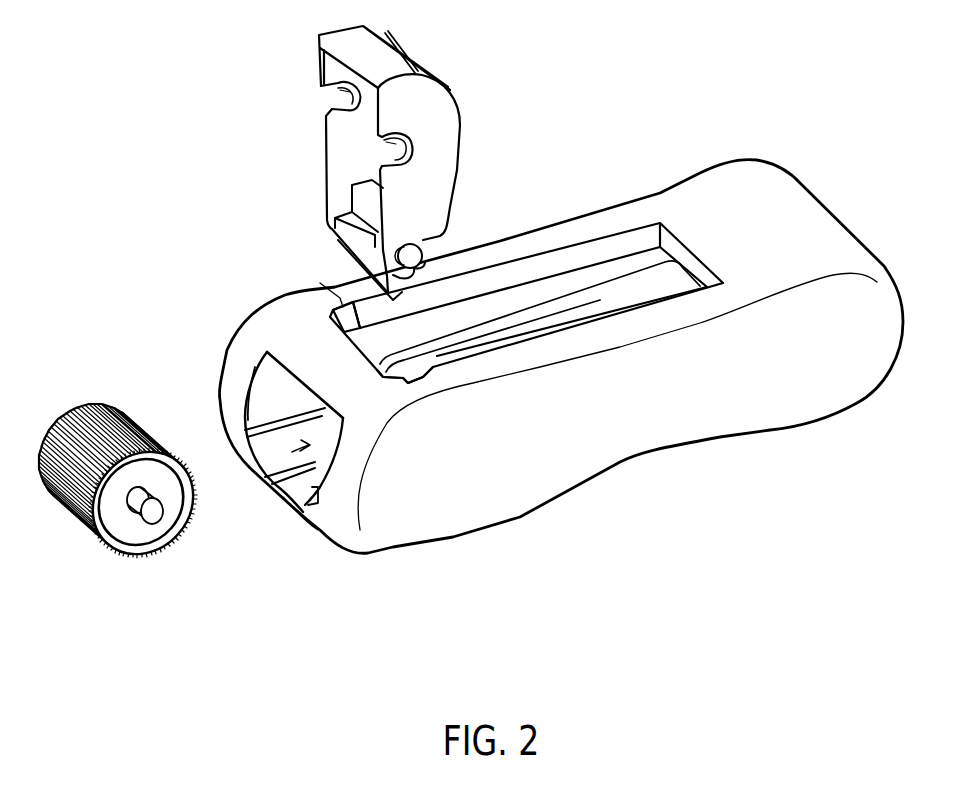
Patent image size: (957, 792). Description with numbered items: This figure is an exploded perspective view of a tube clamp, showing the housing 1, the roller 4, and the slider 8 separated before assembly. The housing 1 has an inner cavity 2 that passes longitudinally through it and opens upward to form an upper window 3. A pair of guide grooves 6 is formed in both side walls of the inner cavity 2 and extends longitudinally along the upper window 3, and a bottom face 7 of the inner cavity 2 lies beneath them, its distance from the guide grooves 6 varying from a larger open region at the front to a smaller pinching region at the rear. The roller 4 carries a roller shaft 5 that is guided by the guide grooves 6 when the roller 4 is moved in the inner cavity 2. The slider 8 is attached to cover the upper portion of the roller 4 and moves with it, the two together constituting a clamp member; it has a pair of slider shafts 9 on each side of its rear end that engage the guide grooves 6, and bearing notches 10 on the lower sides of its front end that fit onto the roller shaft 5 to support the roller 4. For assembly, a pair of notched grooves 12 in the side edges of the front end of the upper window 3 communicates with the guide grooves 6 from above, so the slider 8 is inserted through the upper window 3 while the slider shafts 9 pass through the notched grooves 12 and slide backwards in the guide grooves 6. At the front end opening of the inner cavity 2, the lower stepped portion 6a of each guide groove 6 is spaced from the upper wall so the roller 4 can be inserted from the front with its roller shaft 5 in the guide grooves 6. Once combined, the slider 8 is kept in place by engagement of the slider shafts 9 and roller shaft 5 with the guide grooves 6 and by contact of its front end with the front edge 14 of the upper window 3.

The housing 1 is at (518, 510).
The inner cavity 2 is at (250, 458).
The upper window 3 is at (690, 252).
The roller 4 is at (126, 555).
The roller shaft 5 is at (153, 513).
The guide grooves 6 is at (558, 290).
The lower stepped portion 6a is at (278, 422).
The bottom face 7 is at (293, 497).
The slider 8 is at (458, 120).
The slider shafts 9 is at (417, 255).
The bearing notches 10 is at (332, 97).
The notched grooves 12 is at (345, 303).
The front edge 14 is at (358, 350).